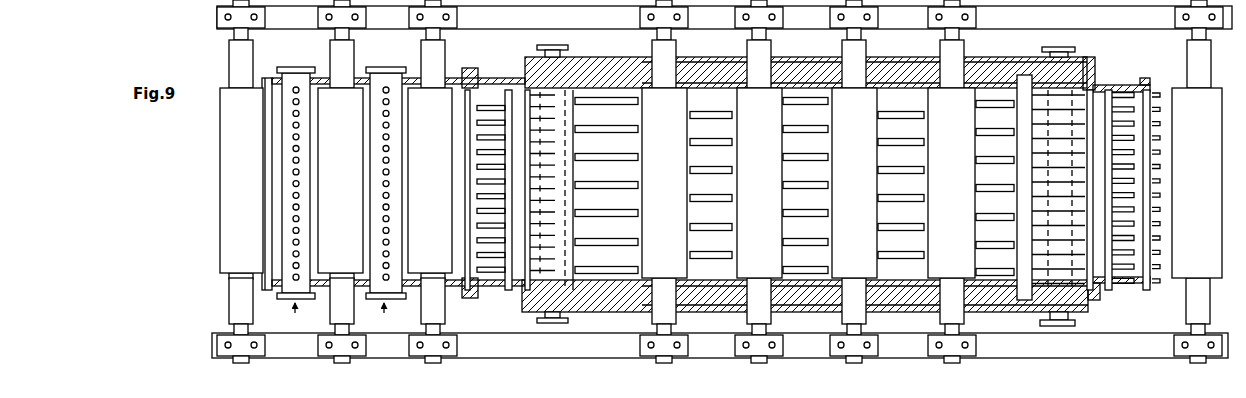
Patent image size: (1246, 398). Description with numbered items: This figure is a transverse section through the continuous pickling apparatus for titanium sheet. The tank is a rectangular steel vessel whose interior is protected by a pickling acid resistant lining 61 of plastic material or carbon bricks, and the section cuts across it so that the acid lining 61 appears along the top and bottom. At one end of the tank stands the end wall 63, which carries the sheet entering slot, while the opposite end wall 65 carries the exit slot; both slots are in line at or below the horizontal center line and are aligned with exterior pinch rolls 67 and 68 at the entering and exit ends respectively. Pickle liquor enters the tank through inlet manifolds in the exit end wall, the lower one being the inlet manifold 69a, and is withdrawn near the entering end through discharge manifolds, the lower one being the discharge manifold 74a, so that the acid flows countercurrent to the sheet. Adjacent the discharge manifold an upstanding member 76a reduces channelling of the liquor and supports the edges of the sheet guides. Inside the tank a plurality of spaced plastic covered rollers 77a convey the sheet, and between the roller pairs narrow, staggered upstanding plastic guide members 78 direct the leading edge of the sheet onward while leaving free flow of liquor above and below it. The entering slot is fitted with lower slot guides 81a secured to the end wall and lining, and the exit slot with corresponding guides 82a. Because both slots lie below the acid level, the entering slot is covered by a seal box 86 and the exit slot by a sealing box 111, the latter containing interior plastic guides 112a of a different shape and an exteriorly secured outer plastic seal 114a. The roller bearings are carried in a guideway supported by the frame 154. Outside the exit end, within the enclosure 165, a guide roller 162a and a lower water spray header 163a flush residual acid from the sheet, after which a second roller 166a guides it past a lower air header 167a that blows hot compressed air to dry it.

The frame 154 is at (577, 26).
The enclosure 165 is at (325, 79).
The lower air header 167a is at (291, 70).
The lower water spray header 163a is at (387, 70).
The exterior pinch roll 68 is at (232, 112).
The lower roller of second roller pair 166a is at (359, 112).
The lower guide roller 162a is at (449, 112).
The end wall 65 is at (526, 63).
The pickling acid resistant lining 61 is at (615, 57).
The roller of roller pair 77a is at (650, 112).
The end wall 63 is at (1088, 73).
The exterior pinch roll 67 is at (1187, 112).
The interior plastic guide 112a is at (471, 156).
The outer plastic seal 114a is at (455, 220).
The lower slot guide 82a is at (558, 192).
The upstanding plastic guide member 78 is at (781, 213).
The upstanding member 76a is at (1016, 118).
The lower slot guide 81a is at (1029, 154).
The sealing box 111 is at (503, 303).
The pickle liquor inlet manifold 69a is at (562, 315).
The discharge manifold 74a is at (1076, 323).
The seal box 86 is at (1128, 308).